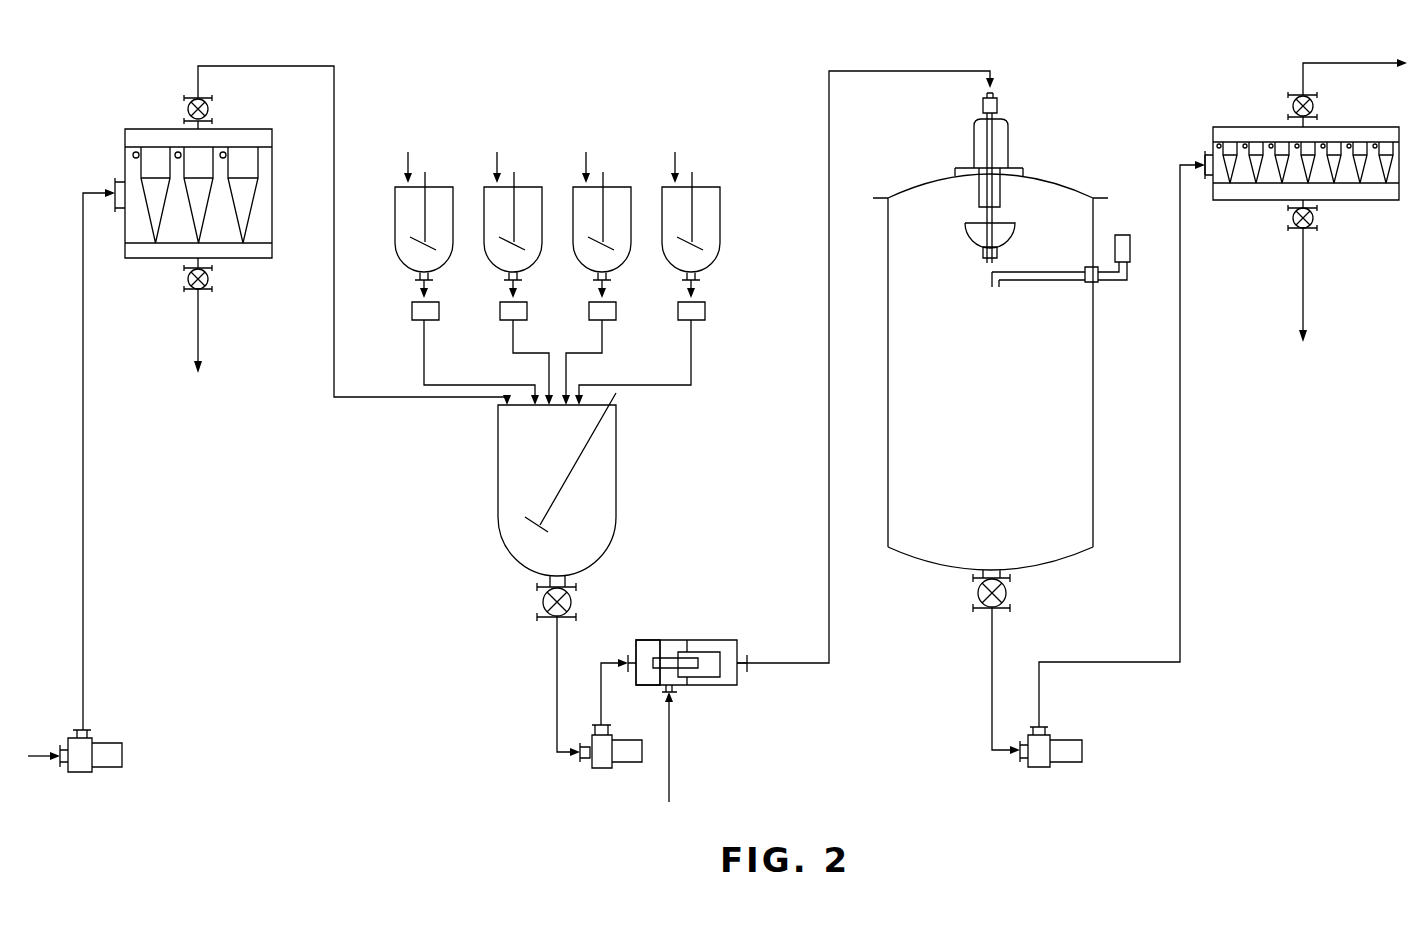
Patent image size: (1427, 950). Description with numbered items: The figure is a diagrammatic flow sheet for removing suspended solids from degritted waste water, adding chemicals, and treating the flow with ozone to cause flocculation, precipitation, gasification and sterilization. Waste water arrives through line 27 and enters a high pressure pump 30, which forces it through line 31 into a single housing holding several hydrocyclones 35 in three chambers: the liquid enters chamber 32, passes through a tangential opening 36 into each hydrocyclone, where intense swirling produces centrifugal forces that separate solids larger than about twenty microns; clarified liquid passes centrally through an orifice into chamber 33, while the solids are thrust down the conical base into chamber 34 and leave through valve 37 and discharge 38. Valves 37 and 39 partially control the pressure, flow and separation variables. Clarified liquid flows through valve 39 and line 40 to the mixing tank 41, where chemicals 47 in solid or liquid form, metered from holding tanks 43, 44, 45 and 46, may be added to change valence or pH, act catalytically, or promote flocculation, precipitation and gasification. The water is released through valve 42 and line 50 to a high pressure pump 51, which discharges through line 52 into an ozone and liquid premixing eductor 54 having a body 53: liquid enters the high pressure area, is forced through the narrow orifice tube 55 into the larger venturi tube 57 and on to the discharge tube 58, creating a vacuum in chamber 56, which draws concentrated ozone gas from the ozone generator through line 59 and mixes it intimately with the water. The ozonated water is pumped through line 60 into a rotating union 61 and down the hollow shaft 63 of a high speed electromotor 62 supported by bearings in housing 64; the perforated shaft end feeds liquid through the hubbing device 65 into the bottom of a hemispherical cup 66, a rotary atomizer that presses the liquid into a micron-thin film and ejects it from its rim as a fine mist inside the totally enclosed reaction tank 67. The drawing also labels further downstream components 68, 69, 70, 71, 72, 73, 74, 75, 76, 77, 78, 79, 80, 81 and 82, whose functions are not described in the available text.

The line 27 is at (36, 751).
The high pressure pump 30 is at (83, 772).
The line 31 is at (84, 487).
The chamber 32 is at (199, 197).
The chamber 33 is at (129, 140).
The chamber 34 is at (153, 252).
The cyclone 35 is at (250, 162).
The tangential opening 36 is at (223, 152).
The valve 37 is at (212, 279).
The solids outlet 38 is at (198, 335).
The valve 39 is at (184, 109).
The line 40 is at (334, 158).
The mixing tank 41 is at (498, 488).
The valve 42 is at (537, 602).
The holding tank 43 is at (438, 192).
The holding tank 44 is at (528, 192).
The holding tank 45 is at (618, 192).
The holding tank 46 is at (701, 192).
The chemicals 47 is at (439, 312).
The line 50 is at (557, 695).
The high pressure pump 51 is at (600, 768).
The line 52 is at (601, 675).
The extruder 53 is at (679, 663).
The eductor 54 is at (647, 650).
The narrow tube 55 is at (672, 658).
The chamber 56 is at (668, 683).
The larger tube 57 is at (700, 670).
The discharge tube 58 is at (735, 675).
The line 59 is at (669, 765).
The line 60 is at (829, 368).
The rotating union 61 is at (997, 110).
The high speed electromotor 62 is at (1000, 140).
The hollow shaft 63 is at (987, 145).
The housing 64 is at (1000, 190).
The hubbing device 65 is at (997, 255).
The hemispherical cup 66 is at (975, 240).
The reaction tank 67 is at (1093, 368).
The feed pipe 68 is at (1070, 282).
The valve 69 is at (1128, 235).
The valve 70 is at (1010, 593).
The line 71 is at (992, 673).
The pump 72 is at (1040, 767).
The line 73 is at (1180, 470).
The cyclone dryer 74 is at (1286, 162).
The upper chamber 75 is at (1360, 132).
The lower chamber 76 is at (1262, 190).
The cyclone 77 is at (1255, 145).
The inlet 78 is at (1215, 147).
The valve 79 is at (1290, 105).
The vapor outlet 80 is at (1342, 63).
The valve 81 is at (1317, 218).
The product outlet 82 is at (1303, 300).